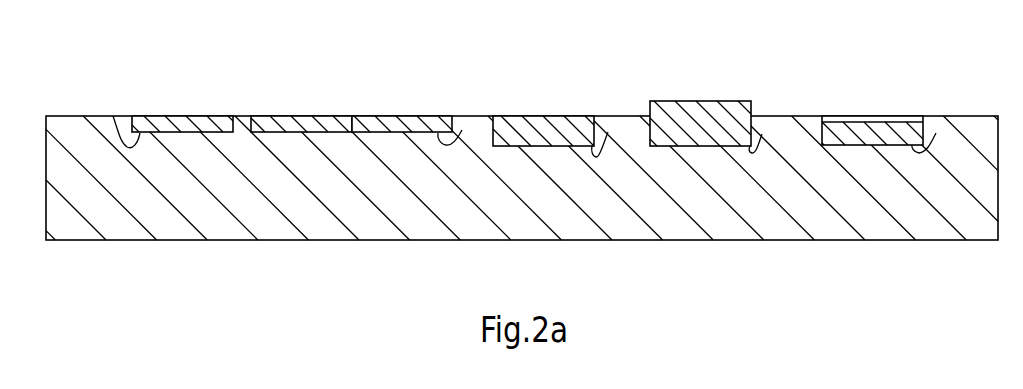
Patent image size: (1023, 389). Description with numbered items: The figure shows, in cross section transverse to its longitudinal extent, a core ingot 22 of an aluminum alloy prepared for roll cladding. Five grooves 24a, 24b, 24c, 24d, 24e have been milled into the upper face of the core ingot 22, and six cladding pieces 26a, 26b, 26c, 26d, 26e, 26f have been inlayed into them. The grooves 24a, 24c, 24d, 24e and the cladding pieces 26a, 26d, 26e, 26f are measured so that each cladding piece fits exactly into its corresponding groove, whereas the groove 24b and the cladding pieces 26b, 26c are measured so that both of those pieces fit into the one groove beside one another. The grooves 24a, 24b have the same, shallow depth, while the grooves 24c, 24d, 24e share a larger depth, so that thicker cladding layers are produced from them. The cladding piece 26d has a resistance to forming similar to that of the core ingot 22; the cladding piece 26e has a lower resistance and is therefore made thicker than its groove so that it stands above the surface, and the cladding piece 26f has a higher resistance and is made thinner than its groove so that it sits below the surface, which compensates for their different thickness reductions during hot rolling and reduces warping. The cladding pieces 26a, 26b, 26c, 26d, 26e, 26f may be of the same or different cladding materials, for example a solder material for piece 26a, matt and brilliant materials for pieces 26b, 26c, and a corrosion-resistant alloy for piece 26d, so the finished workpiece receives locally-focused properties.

The core ingot 22 is at (870, 218).
The groove 24a is at (113, 116).
The groove 24b is at (462, 130).
The groove 24c is at (608, 132).
The groove 24d is at (762, 134).
The groove 24e is at (936, 133).
The cladding piece 26a is at (187, 125).
The cladding piece 26b is at (298, 124).
The cladding piece 26c is at (400, 124).
The cladding piece 26d is at (552, 121).
The cladding piece 26e is at (705, 108).
The cladding piece 26f is at (877, 127).